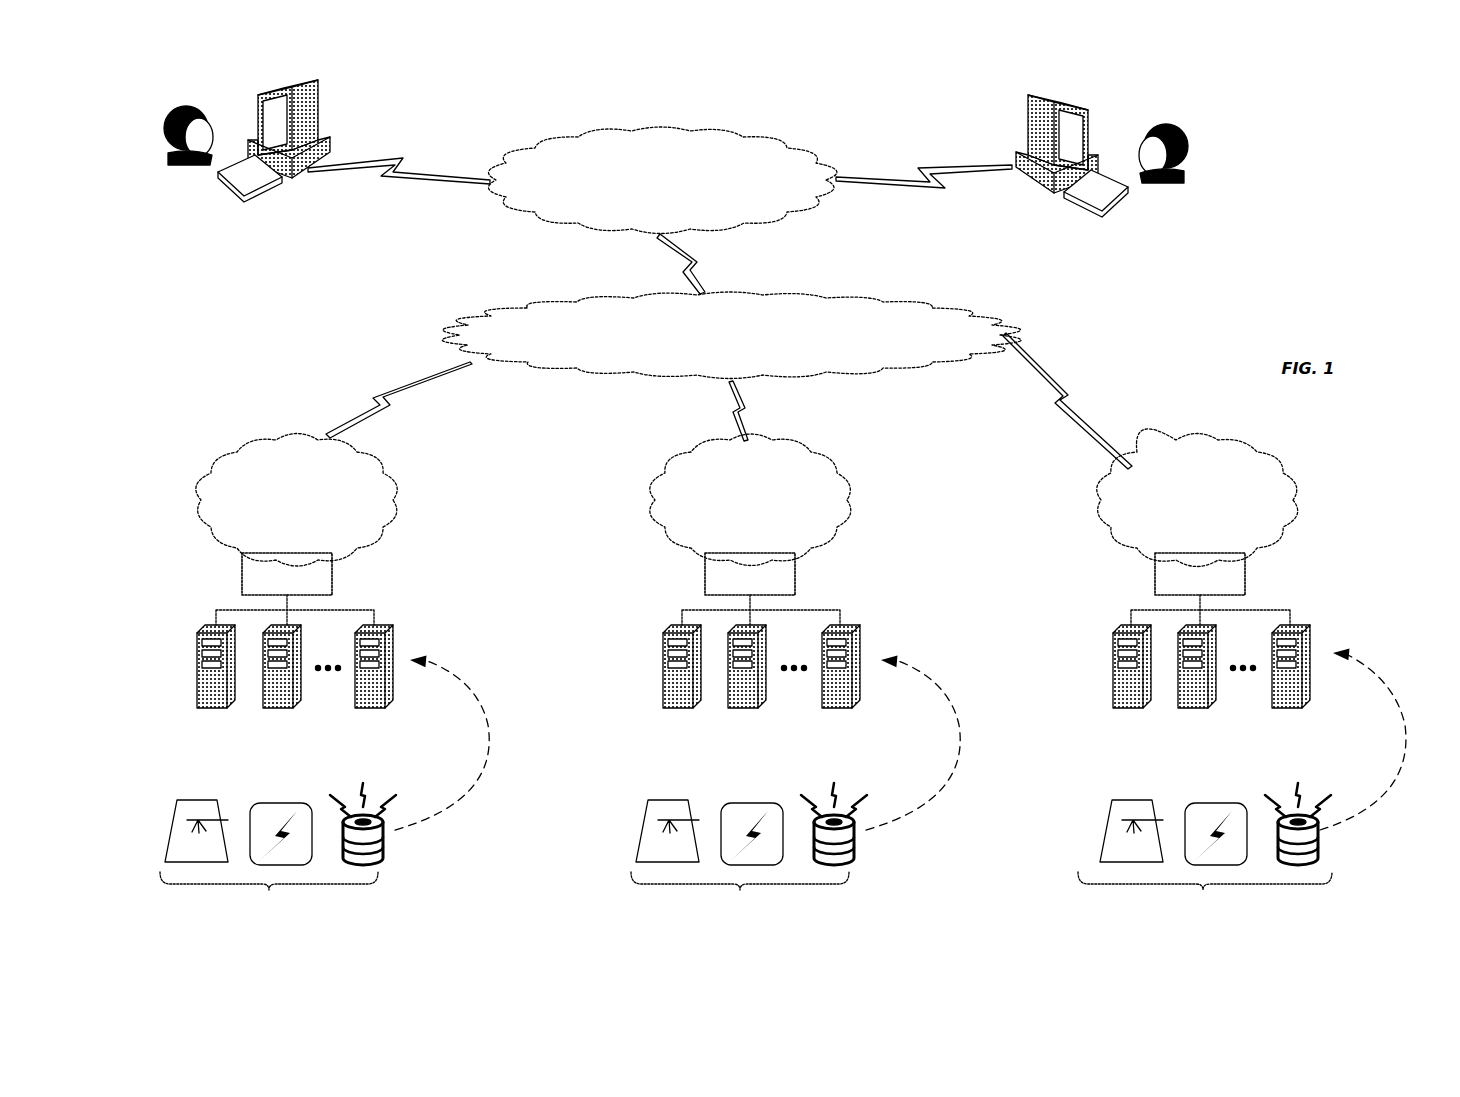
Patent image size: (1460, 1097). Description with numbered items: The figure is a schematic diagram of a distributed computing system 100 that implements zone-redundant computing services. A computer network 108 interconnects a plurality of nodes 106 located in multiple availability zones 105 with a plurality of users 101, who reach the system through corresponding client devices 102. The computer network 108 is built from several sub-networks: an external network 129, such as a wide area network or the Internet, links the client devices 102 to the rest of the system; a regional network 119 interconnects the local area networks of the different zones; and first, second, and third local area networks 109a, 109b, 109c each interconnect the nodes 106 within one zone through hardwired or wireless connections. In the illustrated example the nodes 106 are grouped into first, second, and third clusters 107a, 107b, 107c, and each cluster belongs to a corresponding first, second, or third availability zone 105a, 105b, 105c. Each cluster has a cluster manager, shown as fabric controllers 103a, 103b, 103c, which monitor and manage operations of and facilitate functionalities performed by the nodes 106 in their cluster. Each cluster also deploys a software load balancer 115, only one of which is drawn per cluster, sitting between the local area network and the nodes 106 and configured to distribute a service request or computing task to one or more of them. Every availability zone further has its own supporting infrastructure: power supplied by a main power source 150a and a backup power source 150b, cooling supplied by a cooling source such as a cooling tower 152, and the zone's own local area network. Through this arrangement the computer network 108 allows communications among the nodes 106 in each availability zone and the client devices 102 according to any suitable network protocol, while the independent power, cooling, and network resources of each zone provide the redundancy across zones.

The distributed computing system 100 is at (1345, 152).
The user 101 is at (155, 100).
The client device 102 is at (322, 118).
The external network 129 is at (647, 200).
The regional network 119 is at (715, 357).
The computer network 108 is at (1076, 296).
The first local area network 109a is at (278, 527).
The second local area network 109b is at (732, 527).
The third local area network 109c is at (1197, 498).
The software load balancer 115 is at (242, 590).
The first cluster 107a is at (150, 565).
The second cluster 107b is at (628, 605).
The third cluster 107c is at (1335, 558).
The node 106 is at (203, 632).
The first cluster manager 103a is at (368, 630).
The second cluster manager 103b is at (840, 630).
The third cluster manager 103c is at (1305, 630).
The cooling tower 152 is at (182, 800).
The main power source 150a is at (275, 802).
The backup power source 150b is at (385, 800).
The availability zone 105 is at (1352, 912).
The first availability zone 105a is at (241, 940).
The second availability zone 105b is at (731, 940).
The third availability zone 105c is at (1194, 940).